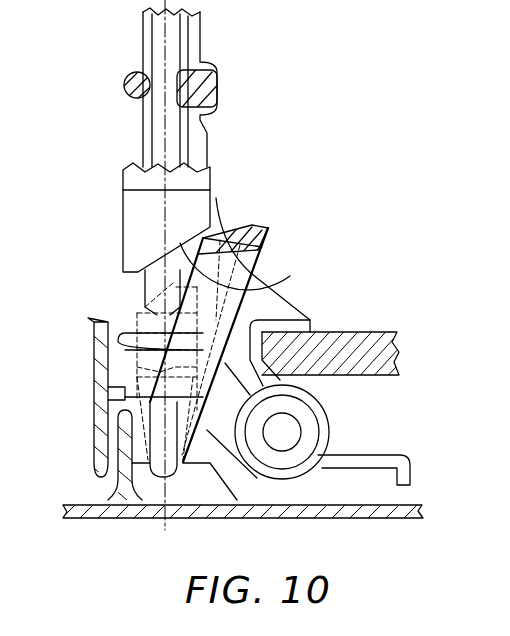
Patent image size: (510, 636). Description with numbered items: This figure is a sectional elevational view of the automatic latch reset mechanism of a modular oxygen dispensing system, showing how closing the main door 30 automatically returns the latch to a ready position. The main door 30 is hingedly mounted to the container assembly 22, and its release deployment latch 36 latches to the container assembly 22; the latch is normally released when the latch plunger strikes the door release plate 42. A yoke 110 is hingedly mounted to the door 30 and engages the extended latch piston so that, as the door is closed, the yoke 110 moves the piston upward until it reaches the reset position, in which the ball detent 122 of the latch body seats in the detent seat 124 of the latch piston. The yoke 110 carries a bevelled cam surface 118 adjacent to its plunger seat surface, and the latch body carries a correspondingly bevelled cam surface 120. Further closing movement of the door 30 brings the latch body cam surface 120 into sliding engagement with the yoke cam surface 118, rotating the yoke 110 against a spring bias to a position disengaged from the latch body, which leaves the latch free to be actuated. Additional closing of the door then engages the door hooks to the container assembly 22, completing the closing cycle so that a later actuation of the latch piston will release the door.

The detent seat 124 is at (125, 72).
The ball detent 122 is at (125, 95).
The bevelled cam surface 118 is at (240, 193).
The bevelled cam surface 120 is at (257, 284).
The yoke 110 is at (260, 293).
The release deployment latch 36 is at (290, 313).
The door release plate 42 is at (123, 333).
The container assembly 22 is at (367, 375).
The main door 30 is at (340, 518).